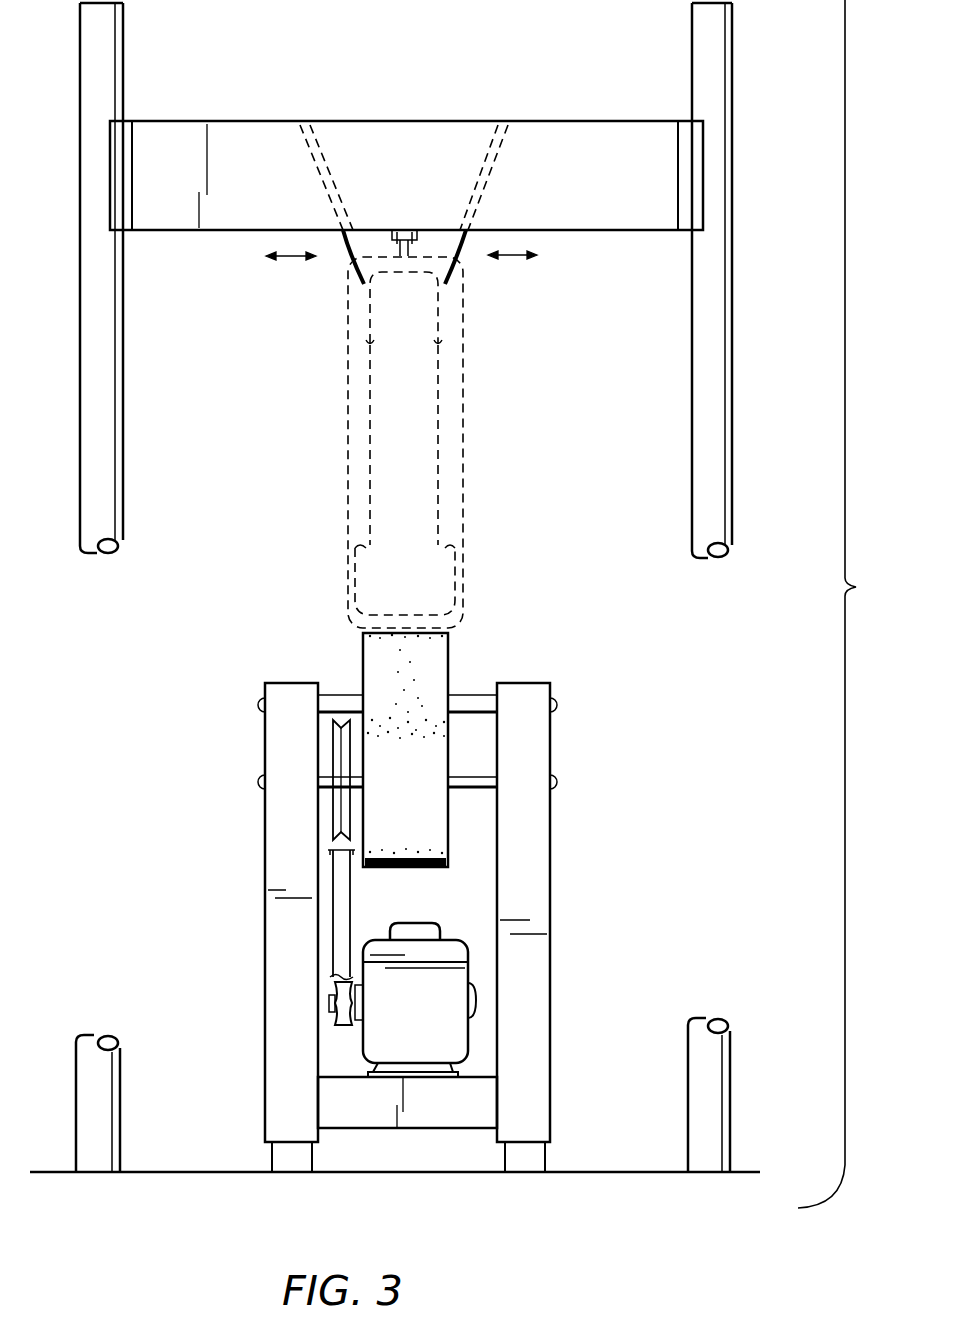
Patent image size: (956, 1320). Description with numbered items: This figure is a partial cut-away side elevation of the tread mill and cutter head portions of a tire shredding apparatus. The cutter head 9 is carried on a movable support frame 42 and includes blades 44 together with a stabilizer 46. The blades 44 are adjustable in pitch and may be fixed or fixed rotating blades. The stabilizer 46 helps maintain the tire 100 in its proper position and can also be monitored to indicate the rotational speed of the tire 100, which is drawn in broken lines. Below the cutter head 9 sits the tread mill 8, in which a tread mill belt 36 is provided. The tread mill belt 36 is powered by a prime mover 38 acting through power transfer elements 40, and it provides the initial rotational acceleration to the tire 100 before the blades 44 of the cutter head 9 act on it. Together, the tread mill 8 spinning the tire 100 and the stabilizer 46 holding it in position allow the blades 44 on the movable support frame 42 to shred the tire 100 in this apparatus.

The tread mill 8 is at (551, 863).
The cutter head 9 is at (427, 121).
The tread mill belt 36 is at (448, 655).
The prime mover 38 is at (455, 938).
The power transfer elements 40 is at (350, 896).
The movable support frame 42 is at (123, 530).
The blades 44 is at (343, 253).
The stabilizer 46 is at (404, 230).
The tire 100 is at (463, 570).